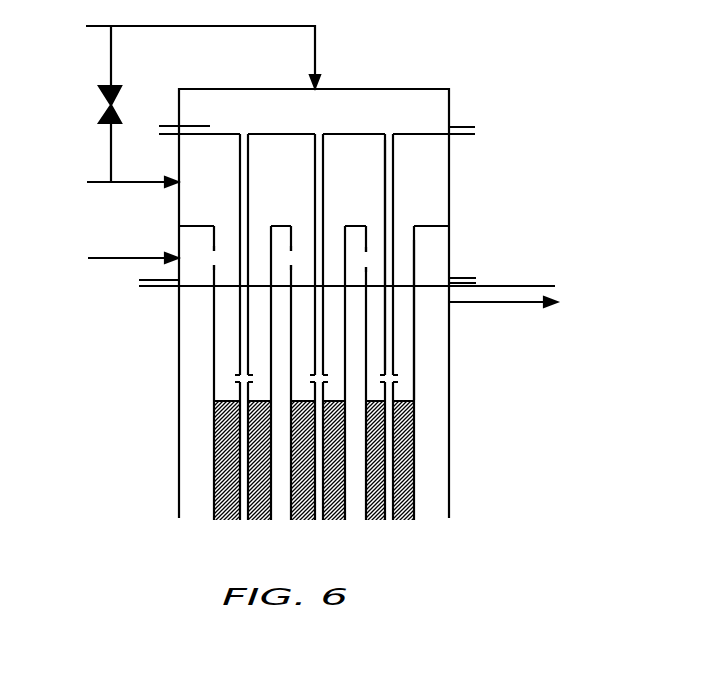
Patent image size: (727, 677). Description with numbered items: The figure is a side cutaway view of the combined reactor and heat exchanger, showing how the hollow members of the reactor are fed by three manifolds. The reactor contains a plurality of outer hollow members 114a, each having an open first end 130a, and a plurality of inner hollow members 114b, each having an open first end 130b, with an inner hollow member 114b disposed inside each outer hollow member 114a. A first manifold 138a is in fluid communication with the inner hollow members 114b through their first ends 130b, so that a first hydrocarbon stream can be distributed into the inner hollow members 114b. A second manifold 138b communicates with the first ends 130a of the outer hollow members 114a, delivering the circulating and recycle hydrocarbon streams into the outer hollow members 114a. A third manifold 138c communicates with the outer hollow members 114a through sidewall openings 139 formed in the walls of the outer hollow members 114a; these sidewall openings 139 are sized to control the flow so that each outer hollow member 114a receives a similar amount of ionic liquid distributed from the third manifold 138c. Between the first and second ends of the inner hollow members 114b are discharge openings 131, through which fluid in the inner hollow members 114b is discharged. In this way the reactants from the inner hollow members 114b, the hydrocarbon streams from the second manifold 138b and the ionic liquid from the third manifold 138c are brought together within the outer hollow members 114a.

The first end of outer hollow member 130a is at (407, 238).
The first end of inner hollow member 130b is at (385, 139).
The first manifold 138a is at (443, 105).
The second manifold 138b is at (446, 153).
The third manifold 138c is at (427, 268).
The sidewall openings 139 is at (213, 258).
The outer hollow members 114a is at (218, 338).
The inner hollow members 114b is at (242, 362).
The discharge openings 131 is at (395, 378).